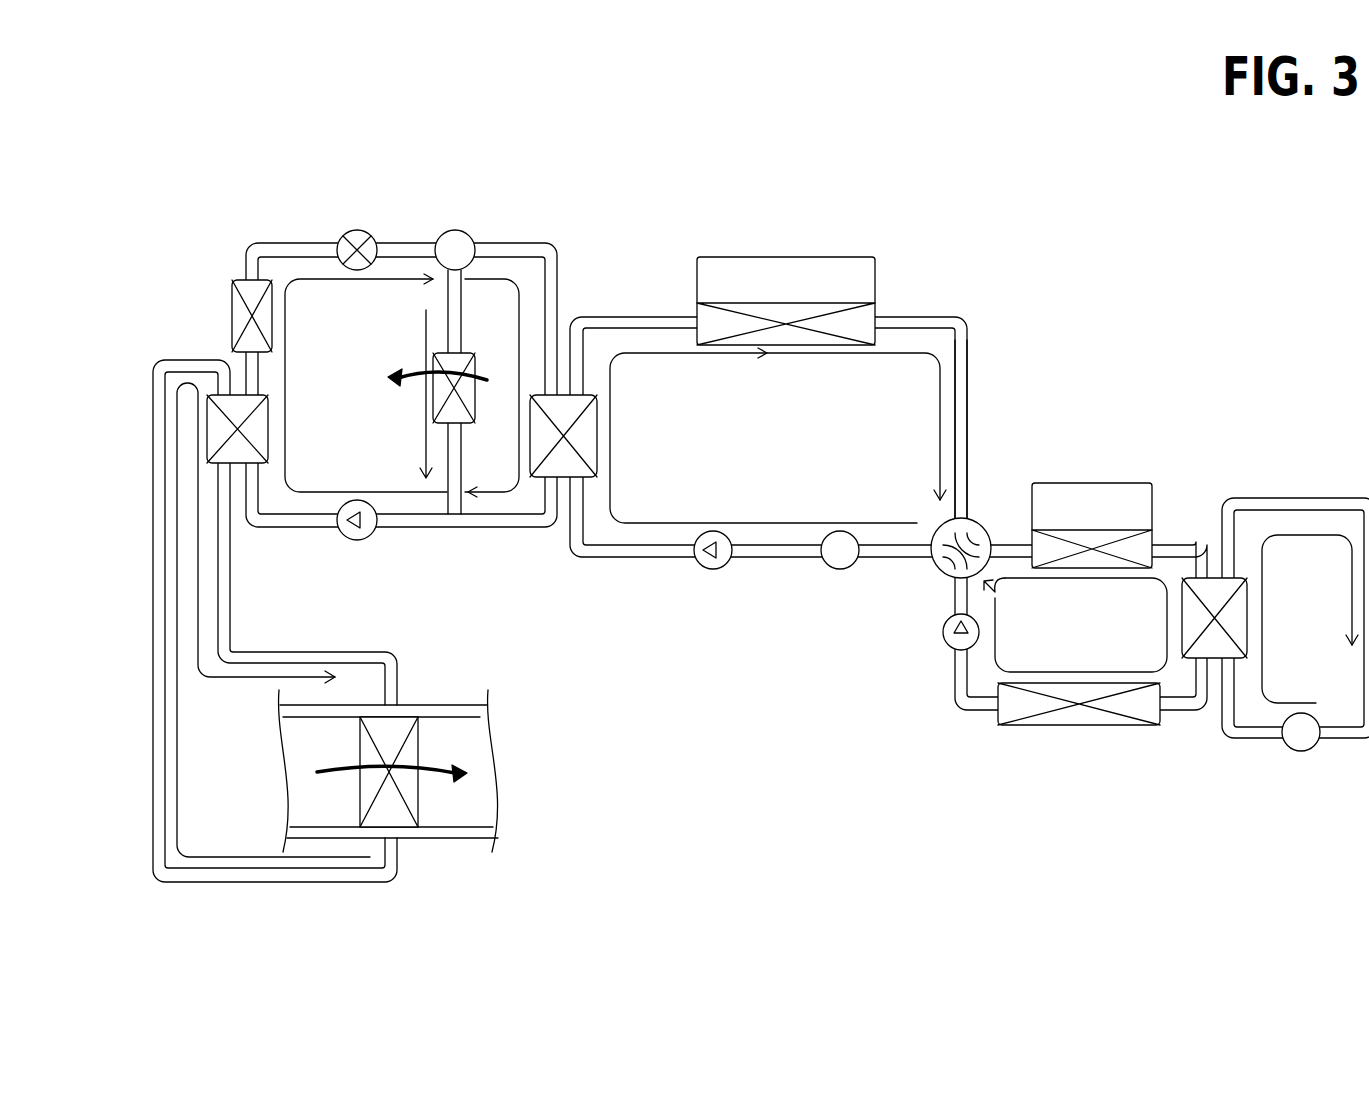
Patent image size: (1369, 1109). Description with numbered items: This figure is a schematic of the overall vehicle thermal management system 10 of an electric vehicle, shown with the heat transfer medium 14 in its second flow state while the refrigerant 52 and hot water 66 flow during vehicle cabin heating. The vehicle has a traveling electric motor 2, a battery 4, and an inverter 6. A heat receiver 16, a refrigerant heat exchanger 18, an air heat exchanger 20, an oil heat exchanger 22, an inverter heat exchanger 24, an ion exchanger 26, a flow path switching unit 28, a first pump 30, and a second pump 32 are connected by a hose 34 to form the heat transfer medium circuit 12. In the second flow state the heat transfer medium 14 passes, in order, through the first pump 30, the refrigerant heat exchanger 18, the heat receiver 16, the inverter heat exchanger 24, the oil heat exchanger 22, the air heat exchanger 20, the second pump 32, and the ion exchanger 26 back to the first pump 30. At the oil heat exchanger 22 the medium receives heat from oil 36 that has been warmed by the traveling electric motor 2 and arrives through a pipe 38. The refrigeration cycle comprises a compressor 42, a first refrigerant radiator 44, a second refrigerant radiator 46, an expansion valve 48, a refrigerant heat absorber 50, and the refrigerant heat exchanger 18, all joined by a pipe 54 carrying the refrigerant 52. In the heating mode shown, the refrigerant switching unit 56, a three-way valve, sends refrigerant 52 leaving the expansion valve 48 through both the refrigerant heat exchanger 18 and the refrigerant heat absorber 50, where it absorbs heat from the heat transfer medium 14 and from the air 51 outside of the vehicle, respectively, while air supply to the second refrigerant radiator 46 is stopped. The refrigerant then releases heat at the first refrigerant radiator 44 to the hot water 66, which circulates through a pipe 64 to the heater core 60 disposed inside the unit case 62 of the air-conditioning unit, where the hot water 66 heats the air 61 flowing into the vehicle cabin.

The vehicle thermal management system 10 is at (238, 158).
The traveling electric motor 2 is at (1300, 752).
The battery 4 is at (786, 273).
The inverter 6 is at (1097, 493).
The heat transfer medium circuit 12 is at (968, 313).
The heat transfer medium 14 is at (940, 425).
The heat receiver 16 is at (795, 300).
The refrigerant heat exchanger 18 is at (578, 403).
The air heat exchanger 20 is at (1040, 725).
The oil heat exchanger 22 is at (1197, 655).
The inverter heat exchanger 24 is at (1085, 537).
The ion exchanger 26 is at (840, 570).
The flow path switching unit 28 is at (988, 527).
The first pump 30 is at (713, 570).
The second pump 32 is at (943, 639).
The hose 34 is at (970, 355).
The oil 36 is at (1352, 592).
The pipe 38 is at (1339, 498).
The compressor 42 is at (355, 549).
The first refrigerant radiator 44 is at (207, 429).
The second refrigerant radiator 46 is at (232, 295).
The expansion valve 48 is at (357, 230).
The refrigerant heat absorber 50 is at (470, 397).
The air outside of the vehicle 51 is at (417, 382).
The refrigerant 52 is at (425, 337).
The pipe 54 is at (295, 243).
The refrigerant switching unit 56 is at (456, 230).
The heater core 60 is at (420, 740).
The air flowing into the vehicle cabin 61 is at (433, 773).
The unit case 62 is at (470, 840).
The pipe 64 is at (248, 883).
The hot water 66 is at (226, 677).